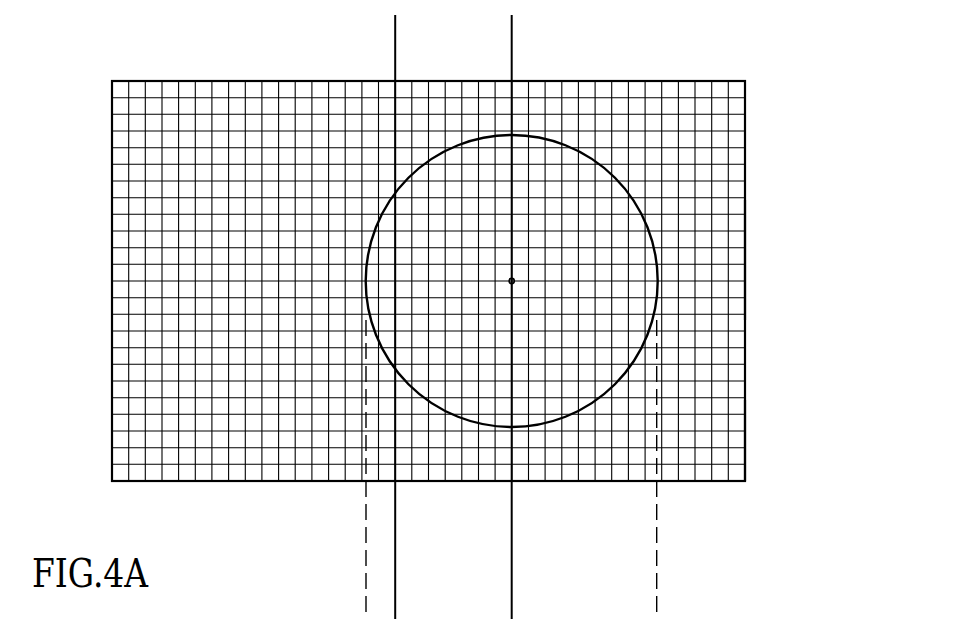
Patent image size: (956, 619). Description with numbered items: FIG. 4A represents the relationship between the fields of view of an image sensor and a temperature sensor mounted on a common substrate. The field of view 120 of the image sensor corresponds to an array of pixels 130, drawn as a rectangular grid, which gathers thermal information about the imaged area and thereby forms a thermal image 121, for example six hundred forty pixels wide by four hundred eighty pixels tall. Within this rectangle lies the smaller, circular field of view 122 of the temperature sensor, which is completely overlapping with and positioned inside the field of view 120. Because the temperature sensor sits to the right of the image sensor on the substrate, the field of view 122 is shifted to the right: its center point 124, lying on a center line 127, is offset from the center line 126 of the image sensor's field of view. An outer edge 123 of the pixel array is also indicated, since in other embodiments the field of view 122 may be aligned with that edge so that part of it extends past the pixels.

The field of view of the image sensor 120 is at (745, 141).
The thermal image 121 is at (763, 257).
The field of view of the temperature sensor 122 is at (623, 373).
The outer edge 123 is at (747, 443).
The center point 124 is at (511, 283).
The center line of the field of view of the image sensor 126 is at (395, 59).
The center line 127 is at (512, 59).
The array of pixels 130 is at (122, 90).